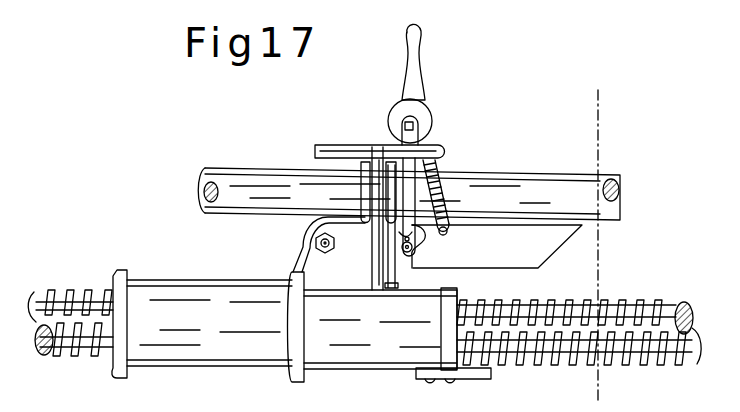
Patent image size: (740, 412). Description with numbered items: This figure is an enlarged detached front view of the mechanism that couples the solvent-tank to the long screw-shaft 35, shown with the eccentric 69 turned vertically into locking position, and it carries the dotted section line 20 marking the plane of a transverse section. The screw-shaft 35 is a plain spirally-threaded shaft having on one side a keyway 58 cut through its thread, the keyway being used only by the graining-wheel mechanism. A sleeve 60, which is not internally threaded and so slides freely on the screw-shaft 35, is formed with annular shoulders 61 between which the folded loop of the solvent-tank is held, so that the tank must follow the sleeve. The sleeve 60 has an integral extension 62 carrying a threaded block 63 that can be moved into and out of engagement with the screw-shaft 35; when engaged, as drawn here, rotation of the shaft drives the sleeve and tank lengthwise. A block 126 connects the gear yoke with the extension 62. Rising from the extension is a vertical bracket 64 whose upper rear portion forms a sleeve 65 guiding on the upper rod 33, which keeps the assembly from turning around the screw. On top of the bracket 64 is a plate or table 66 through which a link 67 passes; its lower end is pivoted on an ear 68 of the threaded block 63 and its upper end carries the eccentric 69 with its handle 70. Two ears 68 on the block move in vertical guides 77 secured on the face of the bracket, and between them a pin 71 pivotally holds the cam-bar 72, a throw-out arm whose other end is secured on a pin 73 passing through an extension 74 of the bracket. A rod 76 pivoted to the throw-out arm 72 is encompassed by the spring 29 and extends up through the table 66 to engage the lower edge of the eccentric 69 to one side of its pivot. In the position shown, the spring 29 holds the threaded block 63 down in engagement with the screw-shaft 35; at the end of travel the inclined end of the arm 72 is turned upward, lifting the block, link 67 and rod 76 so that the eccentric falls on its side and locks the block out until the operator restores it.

The section line 20 is at (598, 235).
The spring 29 is at (410, 190).
The upper rod 33 is at (409, 194).
The screw-shaft 35 is at (640, 292).
The keyway 58 is at (667, 332).
The sleeve 60 is at (205, 275).
The annular shoulders 61 is at (297, 394).
The extension 62 is at (380, 329).
The threaded block 63 is at (457, 291).
The vertical bracket 64 is at (377, 247).
The sleeve 65 is at (352, 180).
The plate or table 66 is at (331, 147).
The link 67 is at (438, 193).
The ear 68 is at (424, 253).
The eccentric 69 is at (423, 118).
The handle 70 is at (417, 65).
The pin 71 is at (413, 244).
The cam-bar 72 is at (508, 245).
The pin 73 is at (320, 242).
The extension 74 is at (318, 262).
The rod 76 is at (440, 200).
The vertical guides 77 is at (386, 283).
The block 126 is at (468, 380).